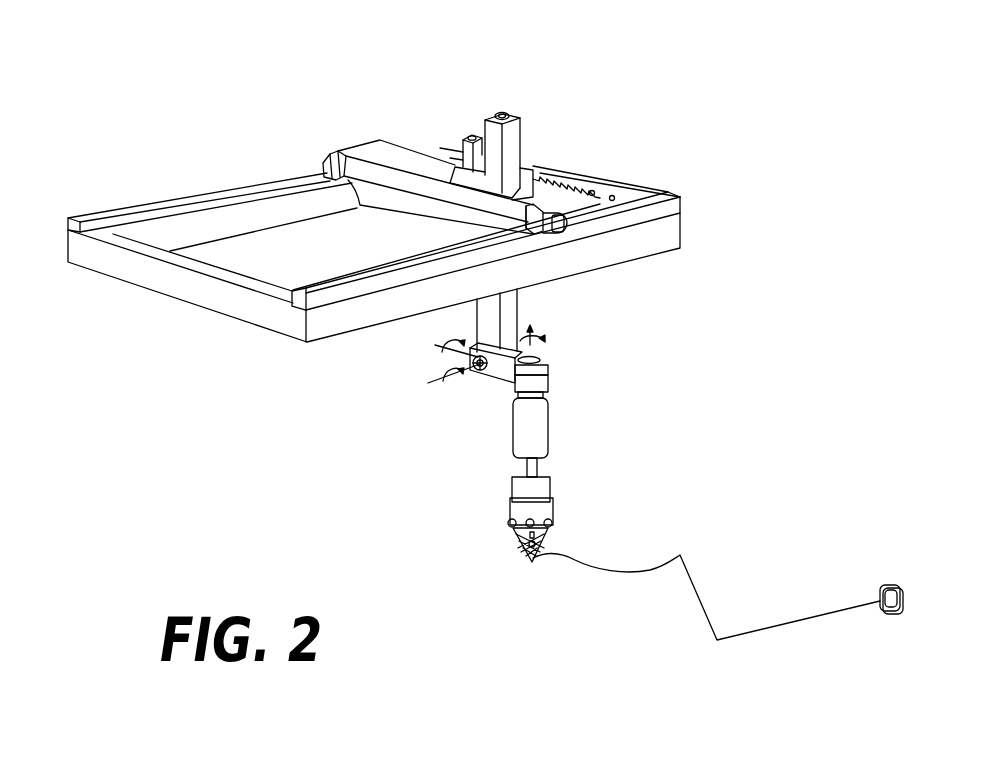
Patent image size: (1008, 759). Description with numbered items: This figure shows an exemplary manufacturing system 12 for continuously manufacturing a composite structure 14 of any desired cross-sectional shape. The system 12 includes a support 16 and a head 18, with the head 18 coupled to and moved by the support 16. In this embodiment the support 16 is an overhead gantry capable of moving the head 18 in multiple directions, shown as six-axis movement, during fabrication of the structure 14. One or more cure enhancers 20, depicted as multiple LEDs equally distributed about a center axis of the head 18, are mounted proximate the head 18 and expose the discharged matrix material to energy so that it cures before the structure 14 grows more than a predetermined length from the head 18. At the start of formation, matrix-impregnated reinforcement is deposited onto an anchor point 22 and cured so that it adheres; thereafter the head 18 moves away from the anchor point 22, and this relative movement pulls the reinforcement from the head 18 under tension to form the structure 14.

The system 12 is at (138, 148).
The composite structure 14 is at (681, 555).
The support 16 is at (667, 235).
The head 18 is at (535, 490).
The cure enhancer 20 is at (529, 522).
The anchor point 22 is at (892, 582).